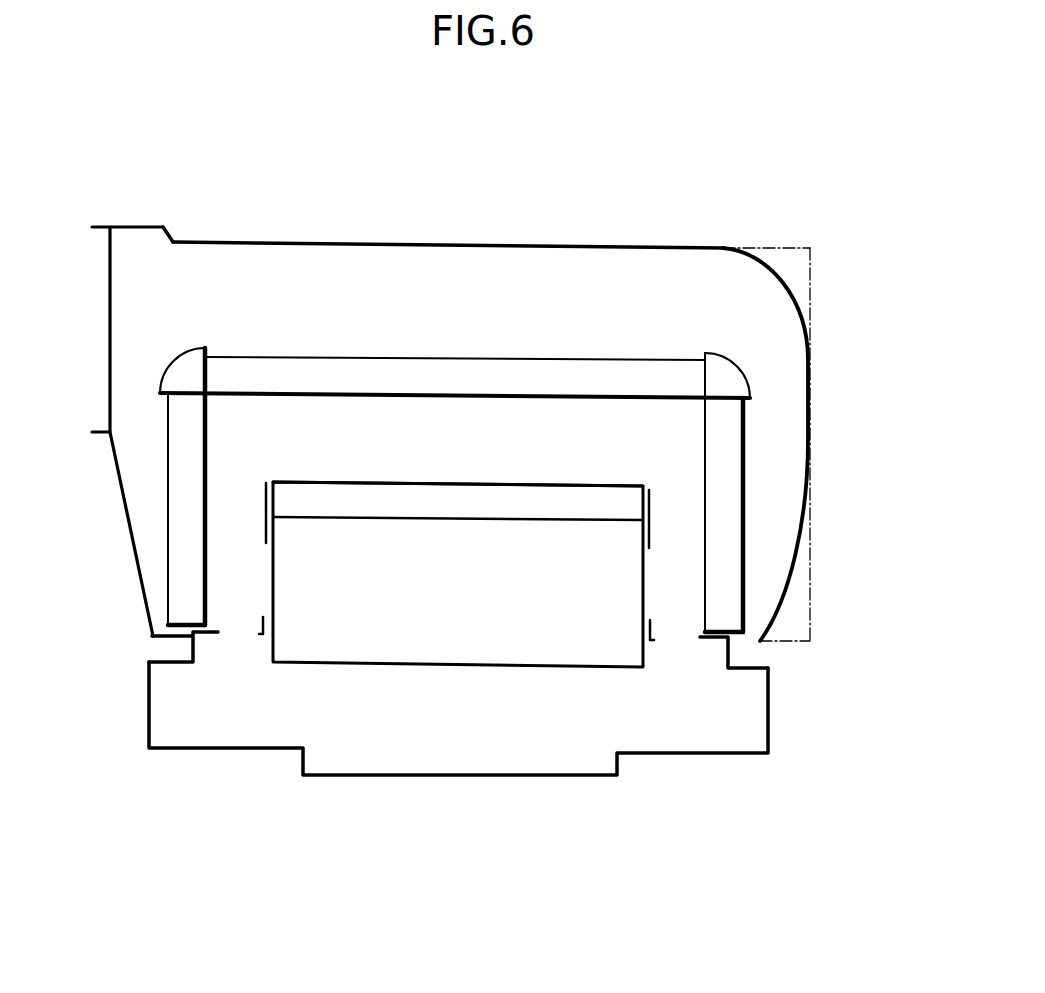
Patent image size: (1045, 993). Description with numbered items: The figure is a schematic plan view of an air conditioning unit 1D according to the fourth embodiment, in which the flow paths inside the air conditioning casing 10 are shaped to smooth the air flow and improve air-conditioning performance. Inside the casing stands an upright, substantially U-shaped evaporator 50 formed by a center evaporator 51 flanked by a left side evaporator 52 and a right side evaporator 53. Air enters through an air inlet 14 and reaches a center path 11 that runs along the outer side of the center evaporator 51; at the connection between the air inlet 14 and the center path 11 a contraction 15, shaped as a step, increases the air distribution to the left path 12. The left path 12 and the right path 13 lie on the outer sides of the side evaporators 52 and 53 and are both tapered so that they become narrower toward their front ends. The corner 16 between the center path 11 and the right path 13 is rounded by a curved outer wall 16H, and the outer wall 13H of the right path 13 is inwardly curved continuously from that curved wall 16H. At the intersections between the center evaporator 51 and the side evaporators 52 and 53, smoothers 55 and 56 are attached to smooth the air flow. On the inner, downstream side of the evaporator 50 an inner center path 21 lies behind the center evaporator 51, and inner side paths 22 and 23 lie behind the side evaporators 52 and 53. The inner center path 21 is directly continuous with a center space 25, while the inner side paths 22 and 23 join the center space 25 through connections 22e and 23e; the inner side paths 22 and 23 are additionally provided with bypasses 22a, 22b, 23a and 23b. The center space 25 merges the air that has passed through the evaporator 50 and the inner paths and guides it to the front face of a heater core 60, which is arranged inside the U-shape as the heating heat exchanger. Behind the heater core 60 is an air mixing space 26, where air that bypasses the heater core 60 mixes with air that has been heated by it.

The air conditioning unit 1D is at (748, 186).
The air conditioning casing 10 is at (413, 240).
The center path 11 is at (457, 280).
The left path 12 is at (153, 578).
The right path 13 is at (762, 493).
The outer wall 13H is at (797, 540).
The air inlet 14 is at (108, 258).
The contraction 15 is at (172, 233).
The corner 16 is at (758, 327).
The curved outer wall 16H is at (777, 278).
The inner center path 21 is at (360, 425).
The center space 25 is at (458, 349).
The inner side path 22 is at (220, 573).
The bypass 22a is at (263, 590).
The bypass 22b is at (232, 635).
The connection 22e is at (265, 425).
The inner side path 23 is at (680, 588).
The bypass 23a is at (647, 588).
The bypass 23b is at (673, 640).
The connection 23e is at (685, 417).
The air mixing space 26 is at (382, 710).
The evaporator 50 is at (607, 350).
The center evaporator 51 is at (543, 368).
The side evaporator 52 is at (180, 530).
The side evaporator 53 is at (725, 584).
The smoother 55 is at (175, 370).
The smoother 56 is at (733, 383).
The heater core 60 is at (470, 518).